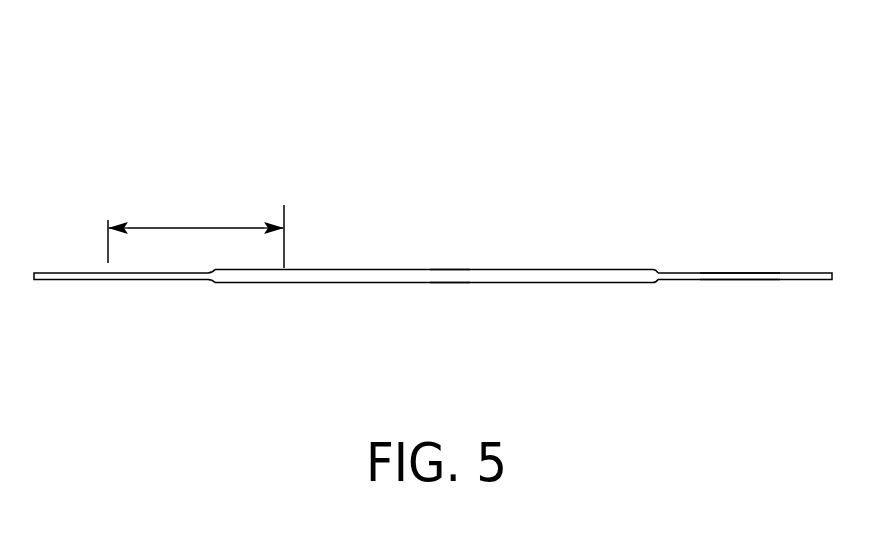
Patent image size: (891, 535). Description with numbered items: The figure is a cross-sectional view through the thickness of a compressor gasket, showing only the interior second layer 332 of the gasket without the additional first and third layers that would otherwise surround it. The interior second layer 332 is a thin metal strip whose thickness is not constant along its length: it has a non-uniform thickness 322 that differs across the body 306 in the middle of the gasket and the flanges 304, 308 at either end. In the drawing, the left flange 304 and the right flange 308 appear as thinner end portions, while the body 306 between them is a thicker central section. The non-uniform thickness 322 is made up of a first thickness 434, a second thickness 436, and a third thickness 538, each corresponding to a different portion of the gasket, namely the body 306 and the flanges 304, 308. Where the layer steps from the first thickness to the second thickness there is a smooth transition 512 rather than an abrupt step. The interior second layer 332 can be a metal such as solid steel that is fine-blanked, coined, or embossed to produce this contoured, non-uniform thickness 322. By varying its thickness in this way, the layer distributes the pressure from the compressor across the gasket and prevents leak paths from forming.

The interior second layer 332 is at (776, 143).
The flange 304 is at (48, 272).
The body 306 is at (559, 268).
The flange 308 is at (786, 272).
The non-uniform thickness 322 is at (223, 228).
The first thickness 434 is at (448, 260).
The second thickness 436 is at (741, 266).
The smooth transition 512 is at (655, 263).
The third thickness 538 is at (91, 258).